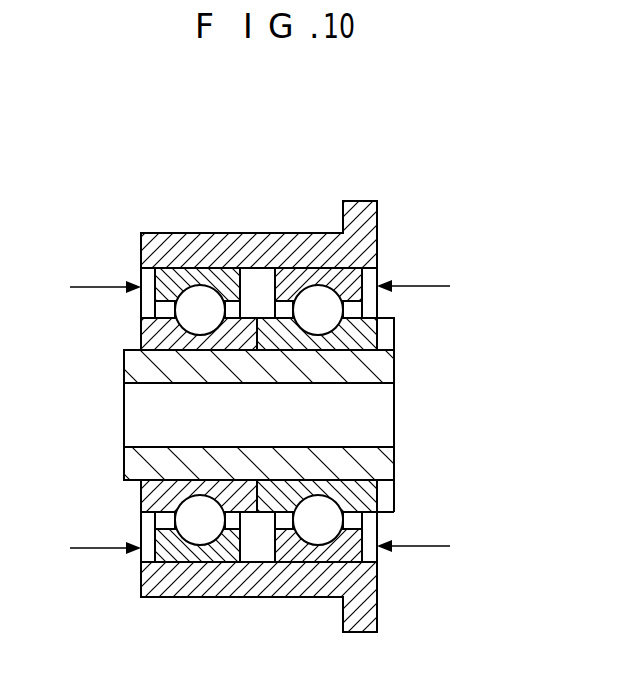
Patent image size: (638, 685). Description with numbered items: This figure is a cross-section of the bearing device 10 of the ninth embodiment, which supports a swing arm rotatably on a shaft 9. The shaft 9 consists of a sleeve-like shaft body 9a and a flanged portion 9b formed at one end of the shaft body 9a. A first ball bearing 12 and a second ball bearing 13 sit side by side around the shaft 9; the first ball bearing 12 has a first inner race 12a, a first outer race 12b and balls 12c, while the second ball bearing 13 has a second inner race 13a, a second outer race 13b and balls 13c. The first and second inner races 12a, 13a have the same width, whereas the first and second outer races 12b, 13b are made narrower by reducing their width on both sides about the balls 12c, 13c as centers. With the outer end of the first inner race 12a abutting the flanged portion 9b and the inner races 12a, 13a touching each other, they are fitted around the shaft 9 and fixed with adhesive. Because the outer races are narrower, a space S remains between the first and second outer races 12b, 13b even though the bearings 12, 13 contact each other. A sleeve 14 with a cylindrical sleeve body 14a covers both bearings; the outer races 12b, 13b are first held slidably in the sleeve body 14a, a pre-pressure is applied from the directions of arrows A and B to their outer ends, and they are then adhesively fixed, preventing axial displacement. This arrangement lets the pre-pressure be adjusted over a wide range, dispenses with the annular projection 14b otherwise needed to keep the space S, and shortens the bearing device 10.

The bearing device 10 is at (399, 192).
The first ball bearing 12 is at (303, 262).
The first inner race 12a is at (375, 333).
The first outer race 12b is at (378, 268).
The balls 12c is at (356, 304).
The second ball bearing 13 is at (188, 262).
The second inner race 13a is at (143, 333).
The second outer race 13b is at (141, 266).
The balls 13c is at (141, 318).
The shaft 9 is at (403, 457).
The shaft body 9a is at (367, 373).
The flanged portion 9b is at (383, 349).
The sleeve 14 is at (382, 580).
The sleeve body 14a is at (203, 582).
The annular projection 14b is at (358, 618).
The space S is at (270, 547).
The arrow A is at (431, 414).
The arrow B is at (90, 415).